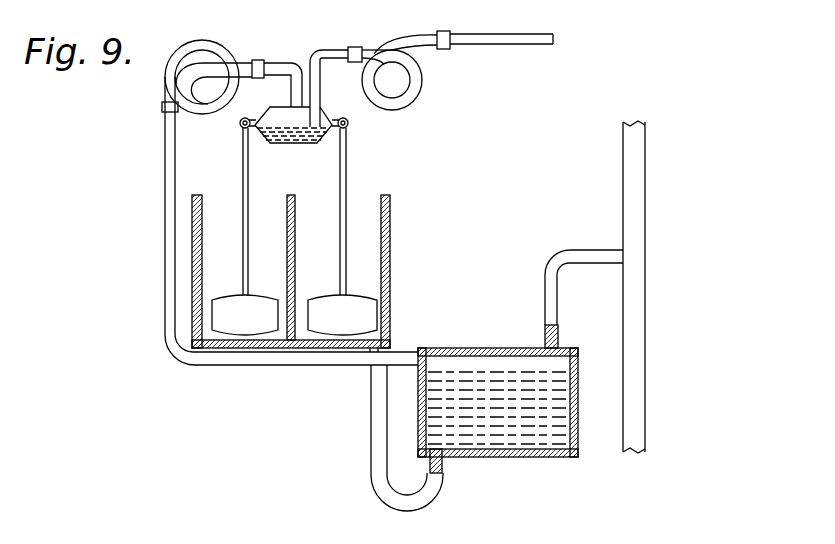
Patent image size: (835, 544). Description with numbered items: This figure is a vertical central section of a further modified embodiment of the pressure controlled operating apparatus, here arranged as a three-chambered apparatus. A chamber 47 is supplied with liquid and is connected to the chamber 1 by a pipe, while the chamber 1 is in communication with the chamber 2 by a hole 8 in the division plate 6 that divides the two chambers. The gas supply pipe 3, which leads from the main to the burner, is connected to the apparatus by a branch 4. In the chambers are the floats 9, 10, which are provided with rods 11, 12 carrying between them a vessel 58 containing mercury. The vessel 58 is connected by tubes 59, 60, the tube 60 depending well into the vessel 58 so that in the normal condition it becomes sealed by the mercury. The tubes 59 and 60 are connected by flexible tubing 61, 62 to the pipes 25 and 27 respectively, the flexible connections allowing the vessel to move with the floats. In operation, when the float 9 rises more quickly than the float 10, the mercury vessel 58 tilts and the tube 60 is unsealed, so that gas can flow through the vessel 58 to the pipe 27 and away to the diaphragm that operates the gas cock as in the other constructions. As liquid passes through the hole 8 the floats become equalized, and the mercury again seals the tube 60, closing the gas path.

The chamber 1 is at (367, 237).
The chamber 2 is at (222, 236).
The gas supply pipe 3 is at (642, 213).
The branch 4 is at (589, 256).
The division plate 6 is at (296, 233).
The hole 8 is at (291, 339).
The float 9 is at (333, 298).
The float 10 is at (261, 297).
The rod 11 is at (348, 160).
The rod 12 is at (242, 163).
The pipe 25 is at (168, 220).
The pipe 27 is at (521, 40).
The chamber 47 is at (483, 360).
The vessel 58 is at (296, 137).
The tube 59 is at (283, 61).
The tube 60 is at (316, 90).
The flexible tubing 61 is at (205, 41).
The flexible tubing 62 is at (409, 32).